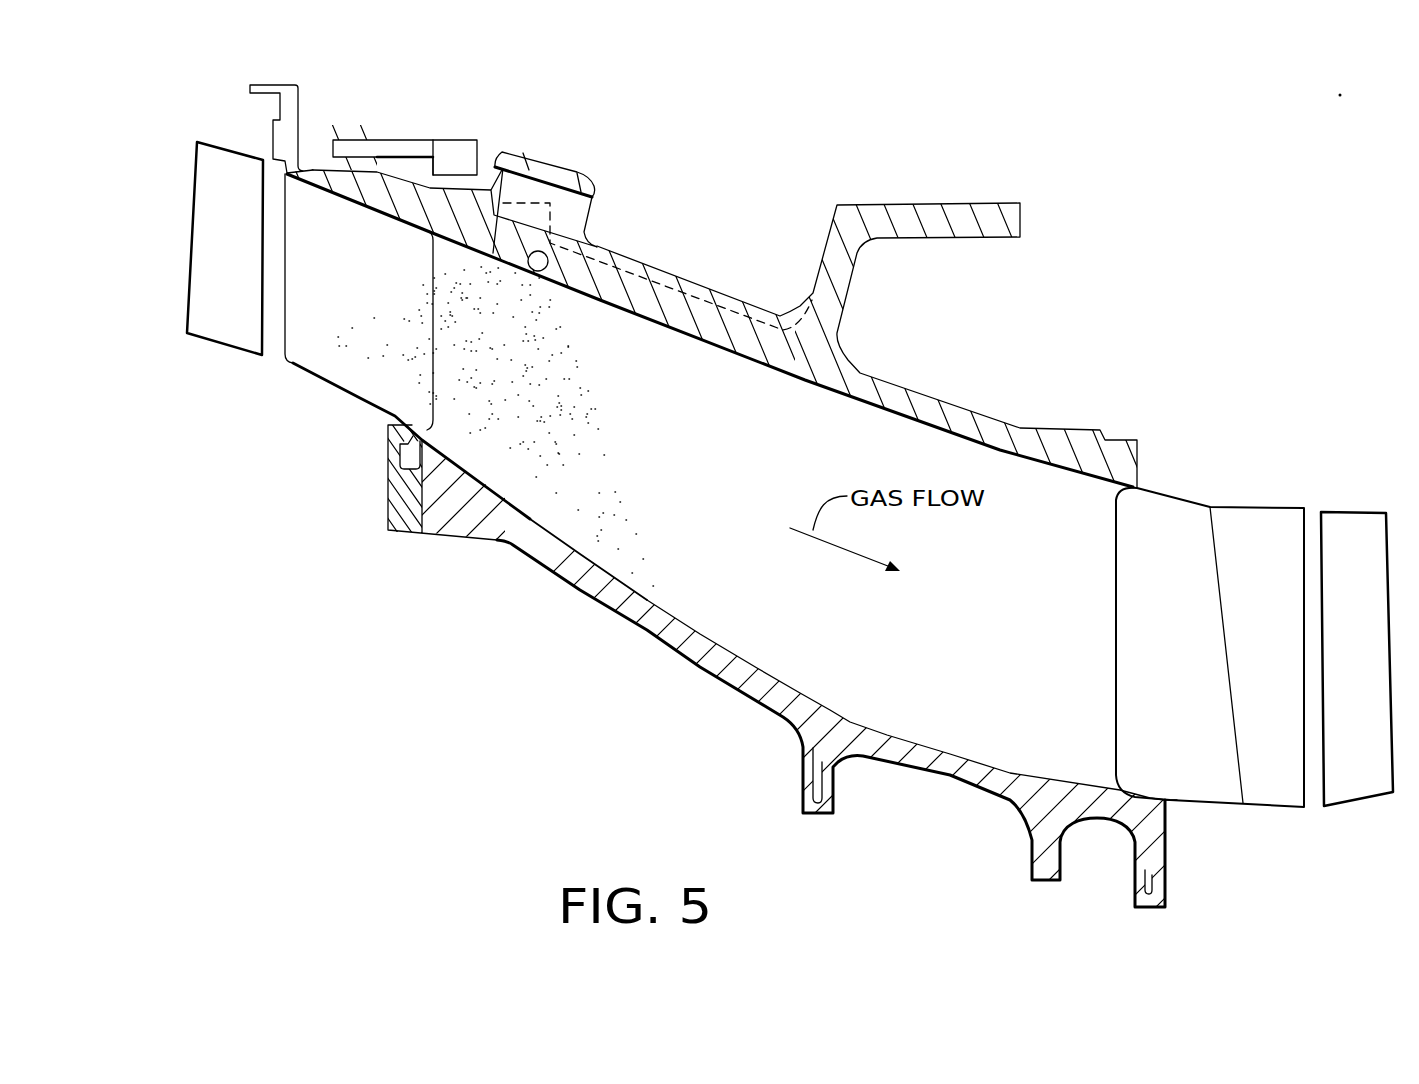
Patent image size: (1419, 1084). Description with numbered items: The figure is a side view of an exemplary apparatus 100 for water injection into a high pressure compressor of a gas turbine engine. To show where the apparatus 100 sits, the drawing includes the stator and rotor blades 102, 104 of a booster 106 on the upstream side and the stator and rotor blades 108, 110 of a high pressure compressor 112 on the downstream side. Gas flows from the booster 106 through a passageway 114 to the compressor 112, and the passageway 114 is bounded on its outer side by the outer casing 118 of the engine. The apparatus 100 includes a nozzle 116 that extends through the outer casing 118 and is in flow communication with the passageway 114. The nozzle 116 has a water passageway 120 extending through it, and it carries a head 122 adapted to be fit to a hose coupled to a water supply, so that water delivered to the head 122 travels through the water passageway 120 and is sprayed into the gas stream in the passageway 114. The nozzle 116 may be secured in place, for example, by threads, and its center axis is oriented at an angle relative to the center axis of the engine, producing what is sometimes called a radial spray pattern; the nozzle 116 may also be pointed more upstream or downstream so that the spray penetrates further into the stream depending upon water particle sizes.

The apparatus for water injection 100 is at (572, 338).
The stator blade 102 is at (305, 347).
The rotor blade 104 is at (228, 322).
The booster 106 is at (271, 251).
The stator blade 108 is at (1233, 527).
The rotor blade 110 is at (1339, 530).
The high pressure compressor 112 is at (1267, 676).
The passageway 114 is at (740, 655).
The nozzle 116 is at (492, 146).
The outer casing 118 is at (651, 307).
The water passageway 120 is at (531, 256).
The head 122 is at (598, 185).